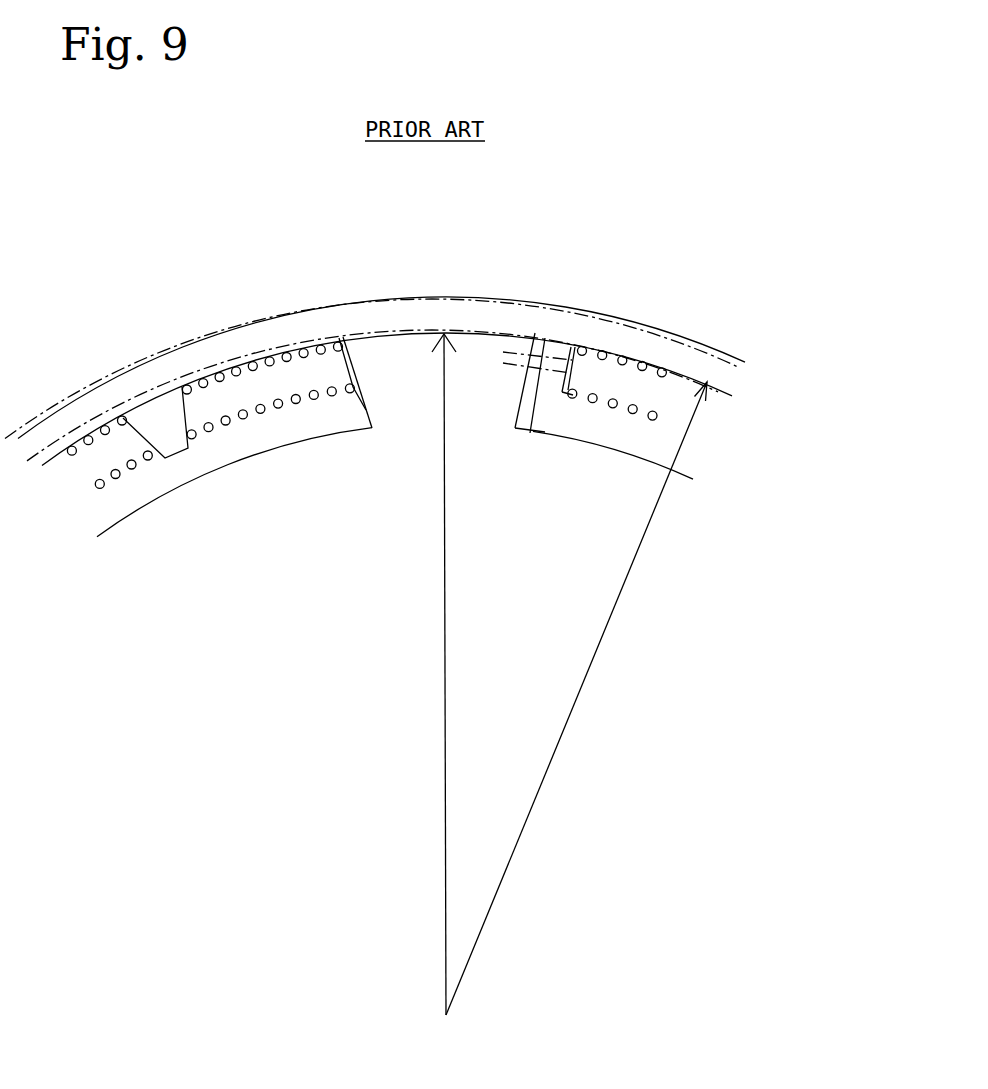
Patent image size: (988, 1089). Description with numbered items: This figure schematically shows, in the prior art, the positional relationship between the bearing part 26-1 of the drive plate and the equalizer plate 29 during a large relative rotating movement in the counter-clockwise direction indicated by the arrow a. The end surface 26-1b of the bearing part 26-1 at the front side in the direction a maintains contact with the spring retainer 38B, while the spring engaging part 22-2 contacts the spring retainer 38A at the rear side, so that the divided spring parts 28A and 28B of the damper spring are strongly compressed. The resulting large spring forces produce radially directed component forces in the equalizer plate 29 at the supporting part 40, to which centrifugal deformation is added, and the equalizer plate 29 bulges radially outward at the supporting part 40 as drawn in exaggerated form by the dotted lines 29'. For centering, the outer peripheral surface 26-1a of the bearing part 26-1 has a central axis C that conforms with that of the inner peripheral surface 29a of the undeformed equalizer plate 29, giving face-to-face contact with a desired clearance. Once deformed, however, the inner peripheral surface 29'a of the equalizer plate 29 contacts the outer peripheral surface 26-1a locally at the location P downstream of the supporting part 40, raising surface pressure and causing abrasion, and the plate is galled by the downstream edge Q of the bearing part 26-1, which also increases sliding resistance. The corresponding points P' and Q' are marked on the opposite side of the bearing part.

The equalizer plate 29 is at (381, 381).
The dotted lines (deformed equalizer plate) 29' is at (372, 353).
The inner peripheral surface of deformed equalizer plate 29'a is at (413, 411).
The inner peripheral surface of equalizer plate 29a is at (682, 372).
The divided spring part 28A is at (116, 478).
The divided spring part 28B is at (280, 408).
The supporting part 40 is at (168, 442).
The spring retainer 38B is at (347, 357).
The spring retainer 38A is at (555, 368).
The bearing part 26-1 is at (500, 358).
The outer peripheral surface of bearing part 26-1a is at (422, 333).
The end surface of bearing part 26-1b is at (365, 412).
The spring engaging part 22-2 is at (523, 405).
The central axis C is at (448, 1013).
The arrow (direction of rotating movement) a is at (490, 212).
The location of local contact P is at (601, 280).
The downstream edge of bearing part Q is at (621, 302).
The point P' is at (360, 285).
The point Q' is at (316, 292).